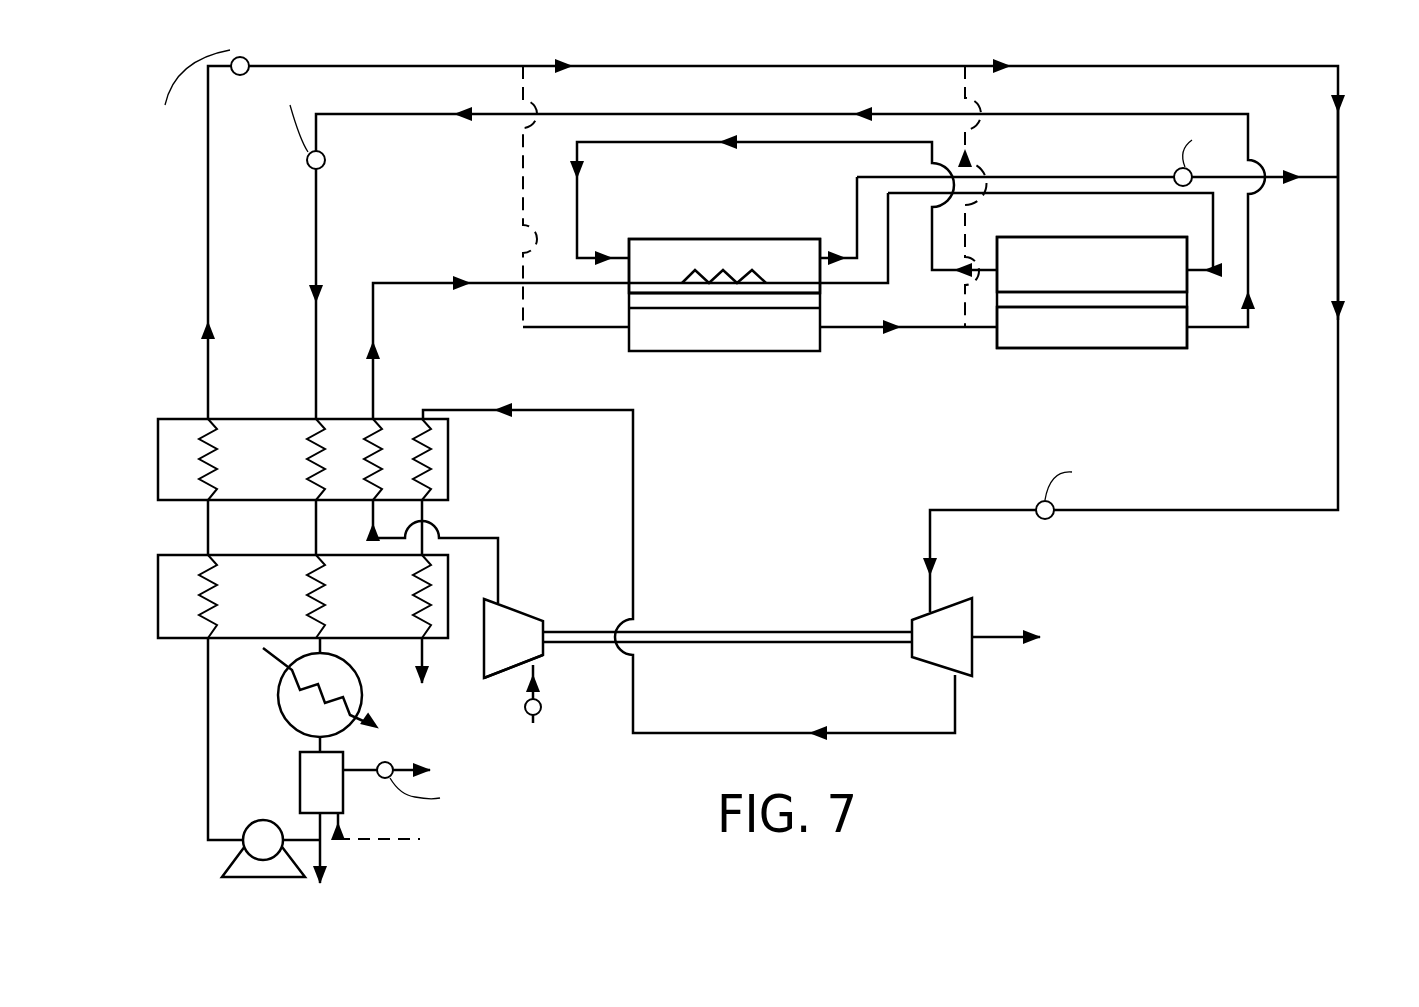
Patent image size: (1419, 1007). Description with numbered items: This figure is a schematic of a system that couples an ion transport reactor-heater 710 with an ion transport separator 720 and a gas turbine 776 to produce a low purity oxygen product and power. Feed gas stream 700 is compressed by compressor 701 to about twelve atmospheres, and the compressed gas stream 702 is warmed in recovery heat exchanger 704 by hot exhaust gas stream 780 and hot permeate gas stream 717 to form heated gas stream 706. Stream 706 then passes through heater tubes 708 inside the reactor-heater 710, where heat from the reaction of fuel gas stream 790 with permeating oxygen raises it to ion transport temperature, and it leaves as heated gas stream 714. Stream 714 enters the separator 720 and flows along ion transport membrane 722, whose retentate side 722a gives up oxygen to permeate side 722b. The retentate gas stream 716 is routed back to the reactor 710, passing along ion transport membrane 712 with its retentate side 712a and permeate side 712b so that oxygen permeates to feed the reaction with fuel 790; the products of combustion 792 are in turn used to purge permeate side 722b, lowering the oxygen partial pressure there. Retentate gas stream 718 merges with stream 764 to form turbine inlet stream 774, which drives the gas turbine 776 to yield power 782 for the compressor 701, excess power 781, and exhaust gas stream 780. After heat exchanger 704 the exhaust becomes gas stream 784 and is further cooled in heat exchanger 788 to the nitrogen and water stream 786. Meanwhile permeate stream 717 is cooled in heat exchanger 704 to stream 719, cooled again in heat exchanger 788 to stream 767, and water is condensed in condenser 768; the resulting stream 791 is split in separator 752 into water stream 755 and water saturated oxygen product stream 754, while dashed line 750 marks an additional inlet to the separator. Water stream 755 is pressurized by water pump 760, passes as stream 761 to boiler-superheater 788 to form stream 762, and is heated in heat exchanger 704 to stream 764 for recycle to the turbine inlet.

The feed gas stream 700 is at (540, 715).
The compressor 701 is at (503, 685).
The compressed gas stream 702 is at (498, 575).
The recovery heat exchanger 704 is at (450, 440).
The heated gas stream 706 is at (375, 300).
The heater tubes 708 is at (690, 272).
The ion transport reactor-heater 710 is at (745, 239).
The ion transport membrane 712 is at (820, 300).
The retentate side 712a is at (655, 292).
The permeate side 712b is at (770, 308).
The heated gas stream 714 is at (893, 265).
The retentate gas stream 716 is at (760, 143).
The permeate gas stream 717 is at (1250, 305).
The retentate gas stream 718 is at (1115, 177).
The gas stream 719 is at (314, 522).
The ion transport separator 720 is at (1112, 237).
The ion transport membrane 722 is at (1187, 298).
The retentate side 722a is at (1092, 290).
The permeate side 722b is at (1112, 307).
The sweep gas line 750 is at (363, 839).
The separator 752 is at (345, 790).
The oxygen product stream 754 is at (405, 760).
The water stream 755 is at (298, 790).
The water pump 760 is at (225, 858).
The water stream 761 is at (206, 750).
The water stream 762 is at (205, 532).
The gas stream 764 is at (215, 355).
The cooled gas stream 767 is at (285, 645).
The condenser 768 is at (290, 690).
The turbine inlet stream 774 is at (1340, 200).
The gas turbine 776 is at (975, 618).
The exhaust gas stream 780 is at (957, 705).
The excess power 781 is at (990, 640).
The power 782 is at (825, 630).
The gas stream 784 is at (425, 512).
The nitrogen and water gas stream 786 is at (425, 650).
The heat exchanger 788 is at (175, 638).
The fuel gas stream 790 is at (550, 335).
The gas stream 791 is at (315, 742).
The products of combustion 792 is at (915, 340).